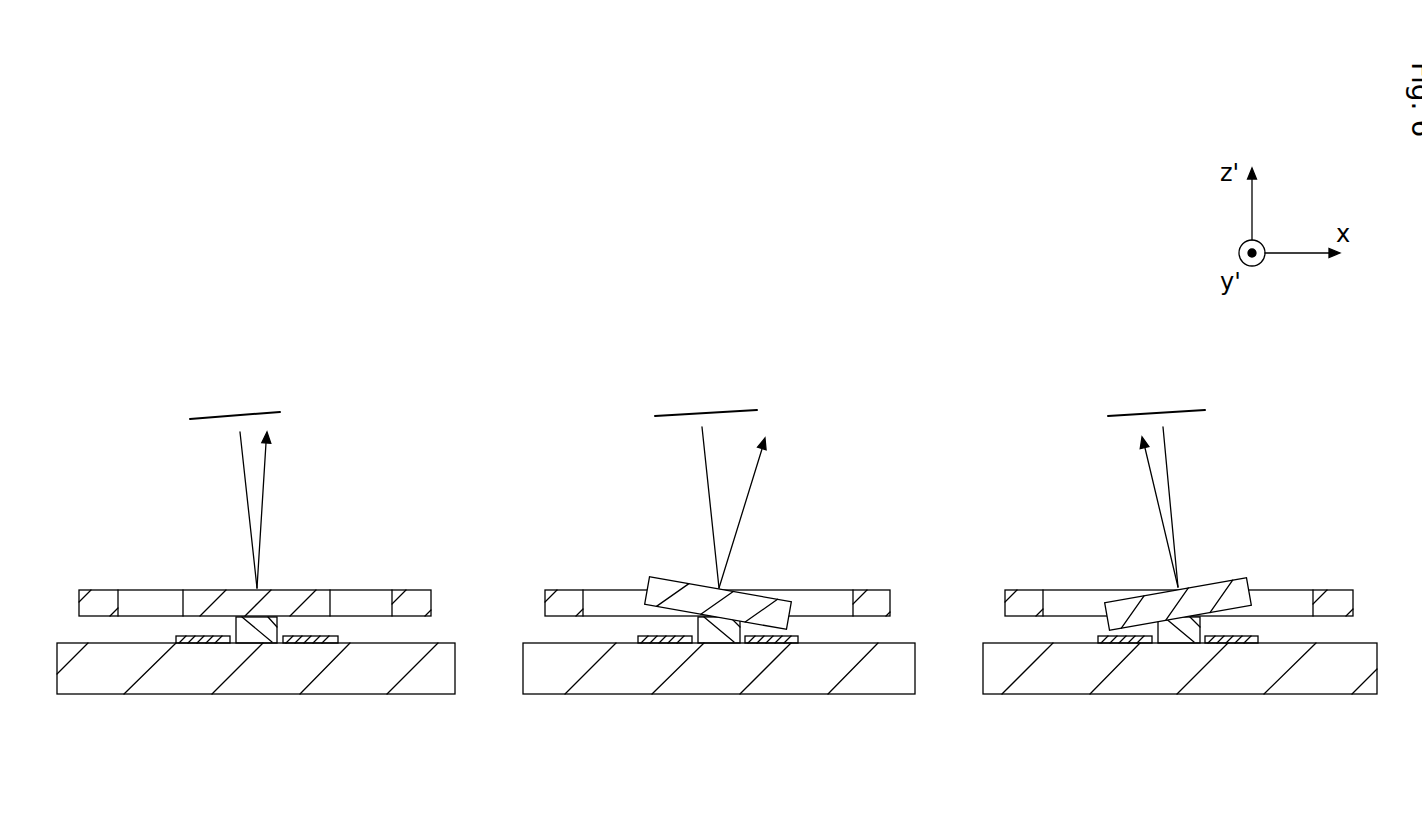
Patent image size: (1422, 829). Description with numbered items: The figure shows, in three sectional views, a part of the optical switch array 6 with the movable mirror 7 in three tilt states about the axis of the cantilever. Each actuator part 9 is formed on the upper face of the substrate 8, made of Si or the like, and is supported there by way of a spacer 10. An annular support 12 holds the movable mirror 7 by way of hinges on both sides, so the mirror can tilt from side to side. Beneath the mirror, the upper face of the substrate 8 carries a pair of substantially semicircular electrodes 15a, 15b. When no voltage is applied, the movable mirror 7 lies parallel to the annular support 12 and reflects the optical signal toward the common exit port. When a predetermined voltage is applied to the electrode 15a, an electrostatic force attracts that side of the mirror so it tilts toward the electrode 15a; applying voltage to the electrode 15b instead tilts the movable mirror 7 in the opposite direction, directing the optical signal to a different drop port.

The optical switch array 6 is at (728, 577).
The movable mirror 7 is at (295, 593).
The substrate 8 is at (418, 685).
The actuator part 9 is at (418, 577).
The spacer 10 is at (258, 648).
The annular support 12 is at (98, 595).
The electrode 15a is at (317, 648).
The electrode 15b is at (178, 650).